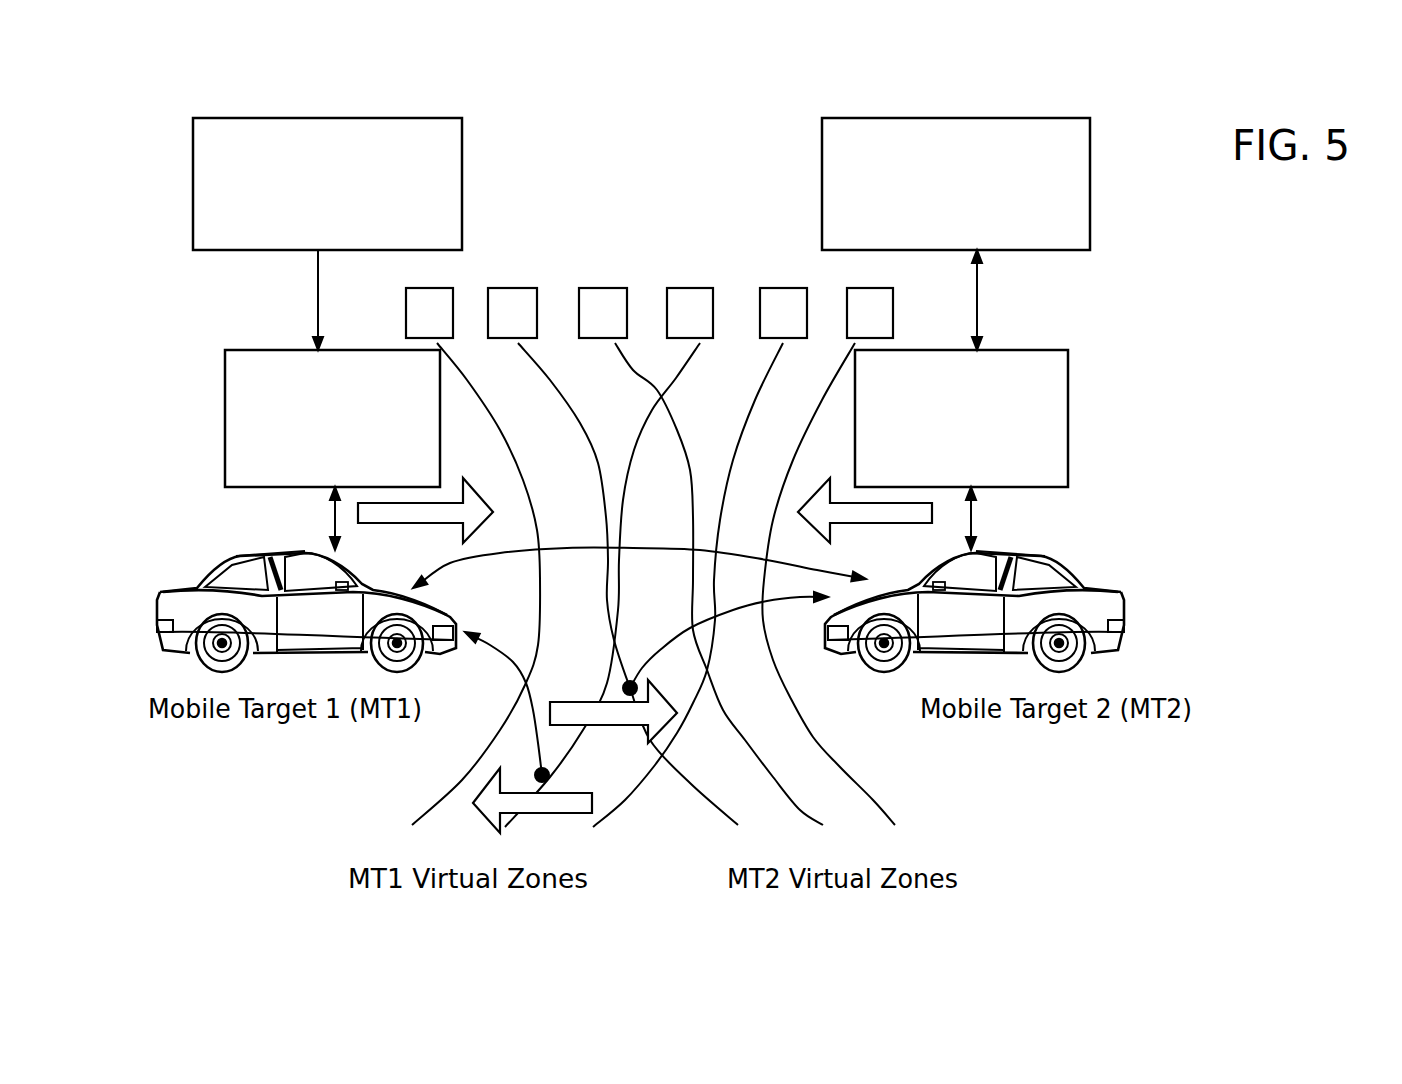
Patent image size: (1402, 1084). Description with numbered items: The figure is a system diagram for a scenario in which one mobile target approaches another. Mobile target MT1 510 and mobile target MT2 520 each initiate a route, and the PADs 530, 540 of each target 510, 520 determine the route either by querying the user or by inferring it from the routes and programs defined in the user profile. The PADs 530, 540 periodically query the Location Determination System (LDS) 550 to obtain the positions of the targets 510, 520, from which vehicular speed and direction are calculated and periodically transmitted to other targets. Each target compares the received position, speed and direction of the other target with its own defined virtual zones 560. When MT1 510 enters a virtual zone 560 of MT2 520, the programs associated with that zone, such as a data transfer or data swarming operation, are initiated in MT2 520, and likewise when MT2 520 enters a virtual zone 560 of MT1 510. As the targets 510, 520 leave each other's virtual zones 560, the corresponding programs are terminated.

The mobile target MT1 510 is at (230, 568).
The mobile target MT2 520 is at (1053, 567).
The personal assistant device (PAD) 530 is at (299, 350).
The personal assistant device (PAD) 540 is at (919, 350).
The location determination system (LDS) 550 is at (440, 118).
The virtual zones 560 is at (686, 288).